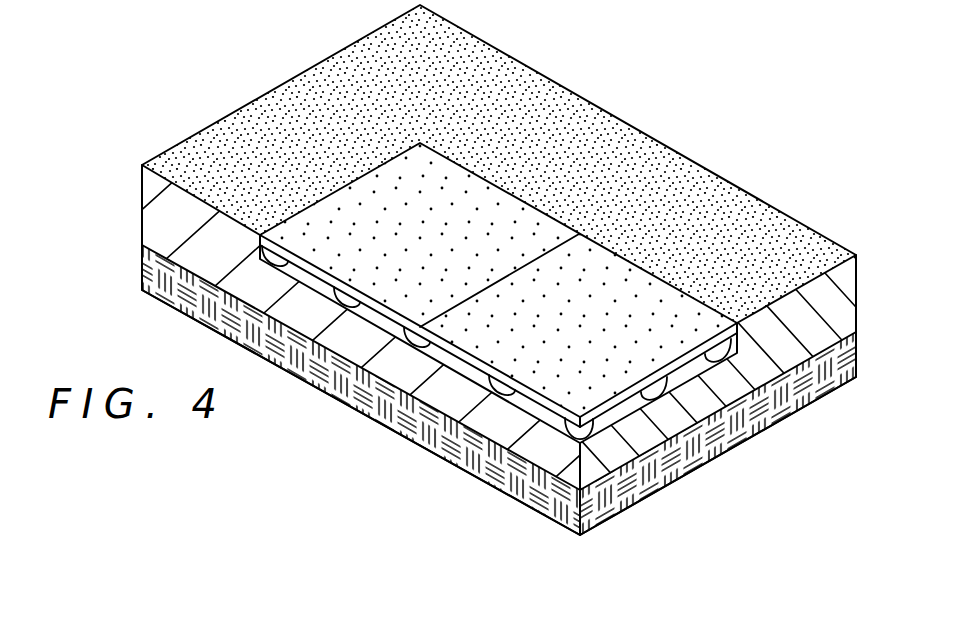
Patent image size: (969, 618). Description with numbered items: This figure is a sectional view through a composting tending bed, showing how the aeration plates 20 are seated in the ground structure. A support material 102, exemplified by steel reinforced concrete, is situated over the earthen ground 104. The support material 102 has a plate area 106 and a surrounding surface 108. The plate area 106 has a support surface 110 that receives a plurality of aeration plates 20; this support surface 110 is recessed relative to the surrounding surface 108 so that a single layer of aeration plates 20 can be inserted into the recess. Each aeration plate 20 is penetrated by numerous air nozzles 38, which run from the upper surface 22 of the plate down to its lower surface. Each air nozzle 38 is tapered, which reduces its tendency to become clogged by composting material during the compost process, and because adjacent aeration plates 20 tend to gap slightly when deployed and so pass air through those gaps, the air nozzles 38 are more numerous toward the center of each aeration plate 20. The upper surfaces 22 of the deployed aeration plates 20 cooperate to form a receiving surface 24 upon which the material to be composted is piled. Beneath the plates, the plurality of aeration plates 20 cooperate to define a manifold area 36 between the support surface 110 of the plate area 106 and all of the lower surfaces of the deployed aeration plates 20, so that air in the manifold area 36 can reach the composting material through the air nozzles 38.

The aeration plate 20 is at (402, 290).
The upper surface 22 is at (373, 210).
The receiving surface 24 is at (485, 345).
The manifold area 36 is at (737, 447).
The air nozzle 38 is at (483, 260).
The support material 102 is at (745, 238).
The earthen ground 104 is at (633, 483).
The plate area 106 is at (692, 373).
The surrounding surface 108 is at (562, 143).
The support surface 110 is at (530, 407).